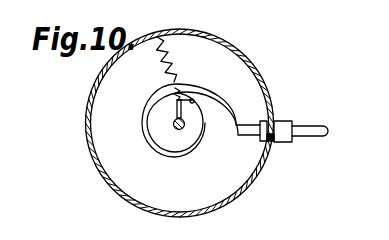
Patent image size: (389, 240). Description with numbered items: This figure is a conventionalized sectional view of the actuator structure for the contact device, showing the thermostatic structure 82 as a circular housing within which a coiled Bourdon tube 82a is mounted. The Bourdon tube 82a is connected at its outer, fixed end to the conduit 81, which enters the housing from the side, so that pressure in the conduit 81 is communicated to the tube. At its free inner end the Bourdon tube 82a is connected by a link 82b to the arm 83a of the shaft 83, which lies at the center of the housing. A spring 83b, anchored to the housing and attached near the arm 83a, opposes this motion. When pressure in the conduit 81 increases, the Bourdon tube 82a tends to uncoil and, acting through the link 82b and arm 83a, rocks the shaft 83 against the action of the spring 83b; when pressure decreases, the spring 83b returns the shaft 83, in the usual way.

The conduit 81 is at (322, 126).
The thermostatic structure 82 is at (268, 97).
The Bourdon tube 82a is at (213, 88).
The link 82b is at (236, 136).
The shaft 83 is at (173, 124).
The arm 83a is at (177, 102).
The spring 83b is at (170, 64).